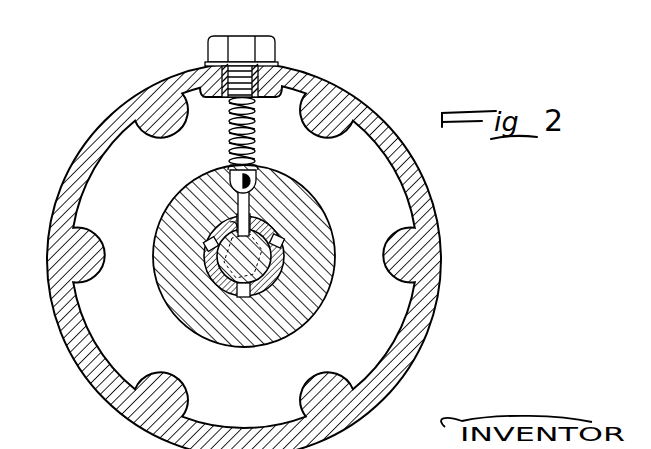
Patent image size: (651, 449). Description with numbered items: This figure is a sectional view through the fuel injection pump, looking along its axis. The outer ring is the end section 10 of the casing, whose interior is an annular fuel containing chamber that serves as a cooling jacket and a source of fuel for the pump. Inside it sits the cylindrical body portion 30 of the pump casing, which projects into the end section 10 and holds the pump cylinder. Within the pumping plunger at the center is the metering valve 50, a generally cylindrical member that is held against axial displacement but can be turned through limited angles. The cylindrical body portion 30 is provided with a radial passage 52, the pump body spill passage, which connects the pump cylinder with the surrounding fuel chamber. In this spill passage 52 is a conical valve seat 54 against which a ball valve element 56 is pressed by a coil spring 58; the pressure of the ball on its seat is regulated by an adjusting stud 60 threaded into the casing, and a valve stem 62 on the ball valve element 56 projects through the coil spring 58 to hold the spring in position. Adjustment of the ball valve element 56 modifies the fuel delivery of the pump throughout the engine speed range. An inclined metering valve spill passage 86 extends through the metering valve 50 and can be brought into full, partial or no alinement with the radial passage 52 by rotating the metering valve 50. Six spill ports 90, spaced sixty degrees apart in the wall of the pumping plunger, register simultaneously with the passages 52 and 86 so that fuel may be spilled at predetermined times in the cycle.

The end section 10 is at (430, 210).
The cylindrical body portion 30 is at (319, 309).
The metering valve 50 is at (268, 253).
The radial passage 52 is at (250, 212).
The conical valve seat 54 is at (257, 179).
The ball valve element 56 is at (231, 183).
The coil spring 58 is at (229, 138).
The adjusting stud 60 is at (225, 46).
The valve stem 62 is at (253, 141).
The metering valve spill passage 86 is at (258, 232).
The spill ports 90 is at (234, 224).